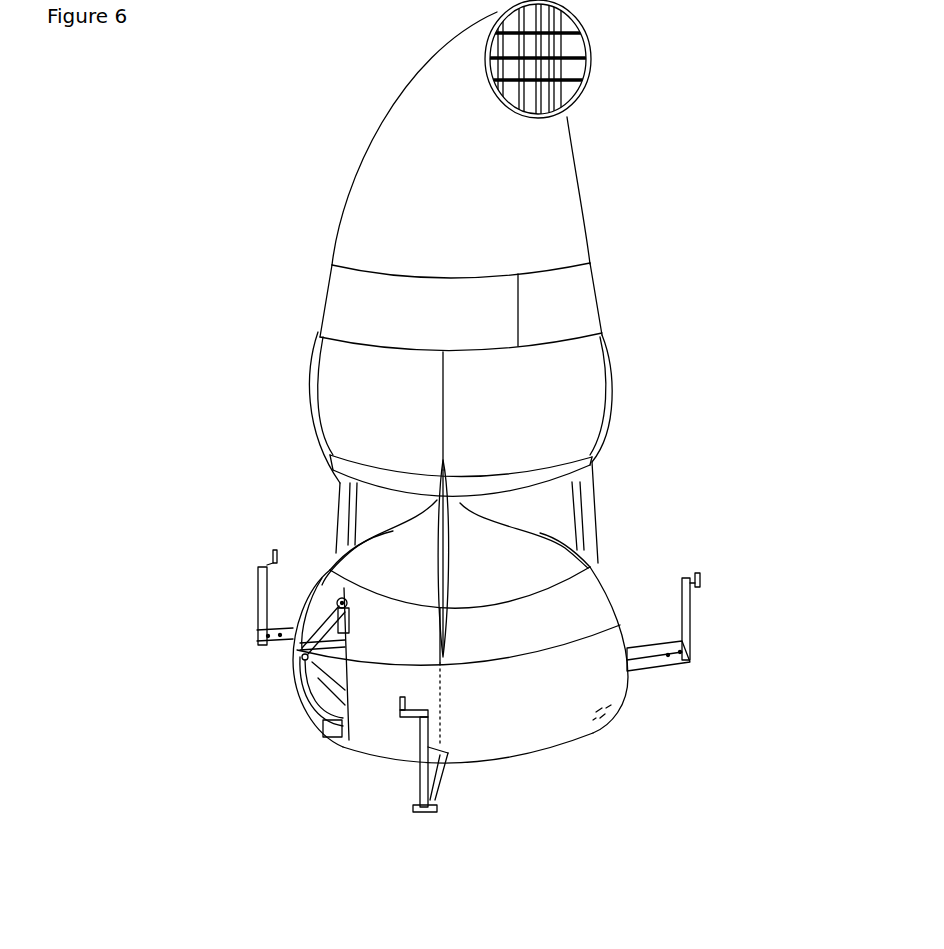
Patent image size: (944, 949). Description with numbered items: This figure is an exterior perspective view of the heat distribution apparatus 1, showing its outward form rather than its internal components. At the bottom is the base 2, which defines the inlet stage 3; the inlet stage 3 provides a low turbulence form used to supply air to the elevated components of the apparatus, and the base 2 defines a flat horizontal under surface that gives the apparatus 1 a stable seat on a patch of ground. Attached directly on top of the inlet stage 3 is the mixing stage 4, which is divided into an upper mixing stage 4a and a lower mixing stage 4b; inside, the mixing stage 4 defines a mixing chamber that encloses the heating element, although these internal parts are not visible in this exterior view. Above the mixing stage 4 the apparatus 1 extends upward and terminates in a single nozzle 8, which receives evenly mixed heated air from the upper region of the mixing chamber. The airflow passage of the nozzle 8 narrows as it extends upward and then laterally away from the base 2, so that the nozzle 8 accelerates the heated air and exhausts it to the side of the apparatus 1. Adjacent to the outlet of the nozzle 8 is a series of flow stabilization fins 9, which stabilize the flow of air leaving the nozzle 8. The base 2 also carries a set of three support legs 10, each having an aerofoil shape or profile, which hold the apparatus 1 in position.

The heat distribution apparatus 1 is at (770, 185).
The base 2 is at (603, 687).
The inlet stage 3 is at (395, 488).
The mixing stage 4 is at (270, 341).
The upper mixing stage 4a is at (588, 298).
The lower mixing stage 4b is at (597, 401).
The nozzle 8 is at (410, 145).
The flow stabilization fins 9 is at (563, 23).
The support legs 10 is at (585, 509).